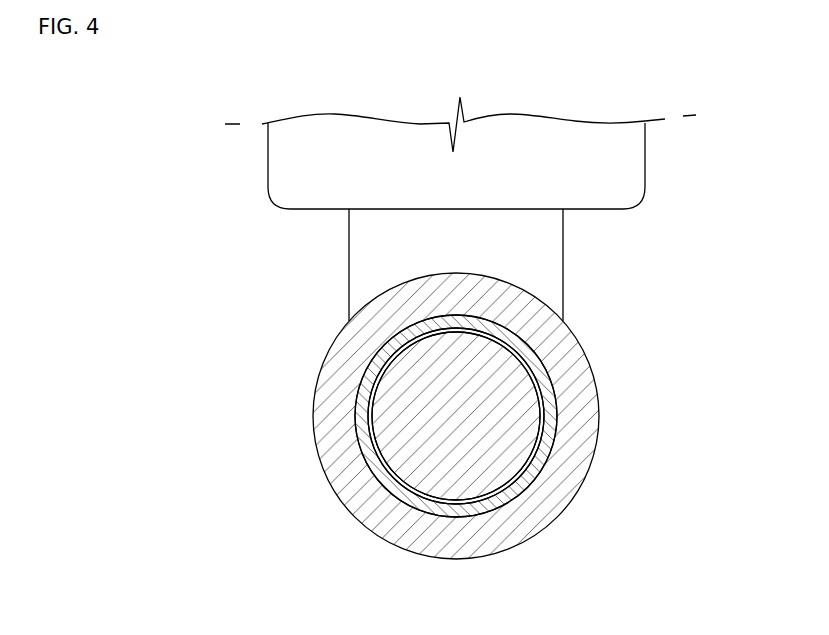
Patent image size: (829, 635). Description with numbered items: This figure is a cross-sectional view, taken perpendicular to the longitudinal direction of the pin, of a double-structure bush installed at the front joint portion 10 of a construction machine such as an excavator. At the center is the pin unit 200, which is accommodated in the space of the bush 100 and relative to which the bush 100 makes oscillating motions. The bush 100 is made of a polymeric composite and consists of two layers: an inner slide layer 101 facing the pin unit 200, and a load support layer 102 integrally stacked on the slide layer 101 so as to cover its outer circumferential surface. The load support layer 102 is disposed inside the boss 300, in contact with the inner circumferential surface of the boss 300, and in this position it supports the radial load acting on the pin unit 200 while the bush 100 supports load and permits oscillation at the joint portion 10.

The joint portion 10 is at (600, 291).
The bush 100 is at (532, 416).
The slide layer 101 is at (538, 386).
The load support layer 102 is at (530, 473).
The pin unit 200 is at (400, 441).
The boss 300 is at (337, 360).